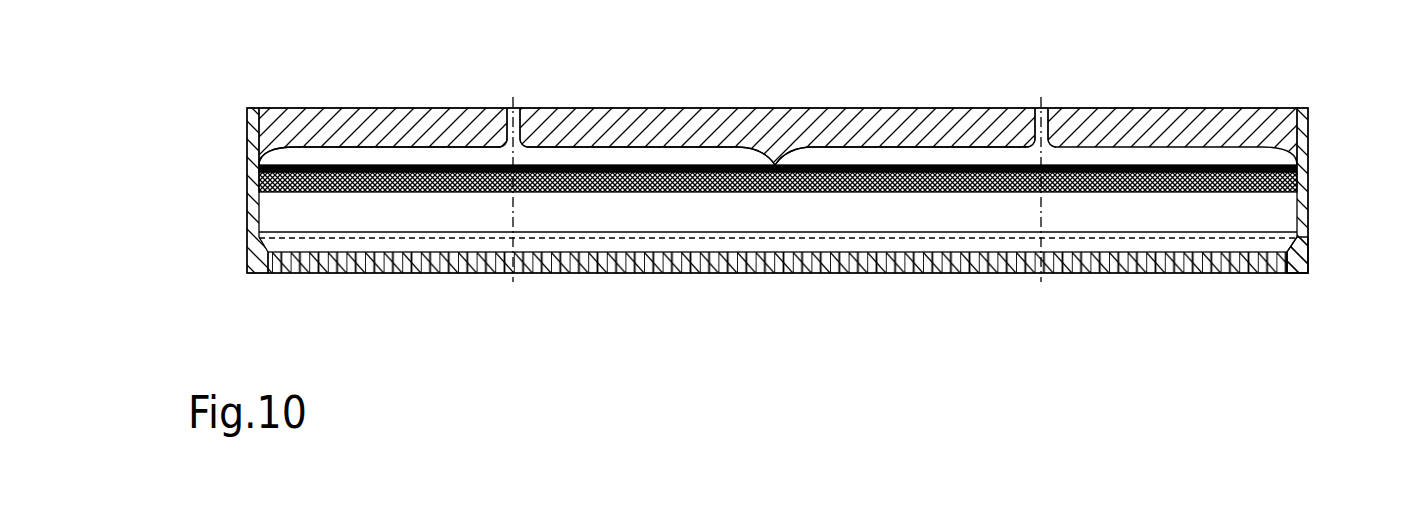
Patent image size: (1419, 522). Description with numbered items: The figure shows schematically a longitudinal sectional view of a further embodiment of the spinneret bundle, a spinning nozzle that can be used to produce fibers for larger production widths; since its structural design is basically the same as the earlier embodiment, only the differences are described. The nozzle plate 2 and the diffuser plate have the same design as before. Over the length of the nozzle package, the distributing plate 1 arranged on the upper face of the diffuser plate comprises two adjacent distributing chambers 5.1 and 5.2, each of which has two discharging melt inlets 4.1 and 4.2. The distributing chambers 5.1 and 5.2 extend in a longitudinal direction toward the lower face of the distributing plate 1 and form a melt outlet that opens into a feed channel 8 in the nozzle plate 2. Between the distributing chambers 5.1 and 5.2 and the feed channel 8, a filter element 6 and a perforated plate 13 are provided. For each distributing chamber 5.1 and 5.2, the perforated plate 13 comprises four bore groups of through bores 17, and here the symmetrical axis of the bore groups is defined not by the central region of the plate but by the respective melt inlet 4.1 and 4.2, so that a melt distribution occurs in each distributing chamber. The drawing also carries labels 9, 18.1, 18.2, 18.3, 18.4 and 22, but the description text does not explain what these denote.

The distributing plate 1 is at (1237, 120).
The nozzle plate 2 is at (1308, 185).
The melt inlet 4.1 is at (513, 107).
The melt inlet 4.2 is at (1038, 103).
The distributing chamber 5.1 is at (373, 153).
The distributing chamber 5.2 is at (900, 155).
The filter element 6 is at (282, 167).
The feed channel 8 is at (287, 210).
The base layer 9 is at (285, 273).
The perforated plate 13 is at (246, 168).
The through bores 17 is at (259, 203).
The first sensor electrode 18.1 is at (403, 200).
The second sensor electrode 18.2 is at (897, 200).
The third sensor electrode 18.3 is at (707, 200).
The fourth sensor electrode 18.4 is at (1197, 200).
The corner region 22 is at (1308, 250).